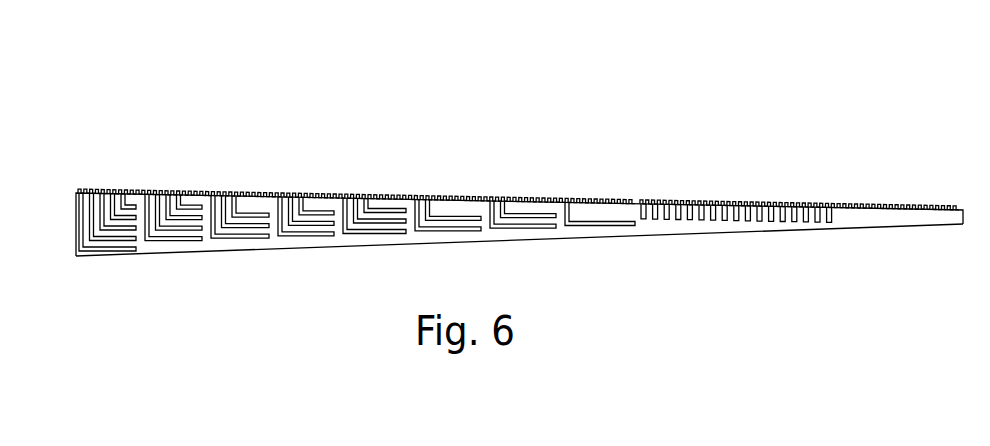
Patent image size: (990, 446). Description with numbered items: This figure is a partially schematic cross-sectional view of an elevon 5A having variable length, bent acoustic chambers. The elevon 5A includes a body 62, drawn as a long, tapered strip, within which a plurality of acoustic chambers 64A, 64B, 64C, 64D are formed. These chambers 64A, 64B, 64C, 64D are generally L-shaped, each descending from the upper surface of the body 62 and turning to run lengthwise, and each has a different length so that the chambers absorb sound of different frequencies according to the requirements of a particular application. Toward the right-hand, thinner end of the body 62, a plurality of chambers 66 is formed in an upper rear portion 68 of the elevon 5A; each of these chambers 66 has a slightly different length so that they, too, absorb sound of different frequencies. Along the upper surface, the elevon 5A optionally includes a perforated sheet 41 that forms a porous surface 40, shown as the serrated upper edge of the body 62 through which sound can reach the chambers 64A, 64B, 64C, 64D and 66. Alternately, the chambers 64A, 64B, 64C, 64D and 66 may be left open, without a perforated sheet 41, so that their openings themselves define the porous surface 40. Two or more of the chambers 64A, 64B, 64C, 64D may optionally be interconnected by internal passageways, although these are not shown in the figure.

The porous surface 40 is at (445, 199).
The perforated sheet 41 is at (332, 196).
The body 62 is at (445, 245).
The acoustic chamber 64A is at (88, 192).
The acoustic chamber 64B is at (105, 192).
The acoustic chamber 64C is at (117, 192).
The acoustic chamber 64D is at (127, 192).
The chambers 66 is at (642, 203).
The upper rear portion 68 is at (779, 177).
The elevon 5A is at (806, 239).